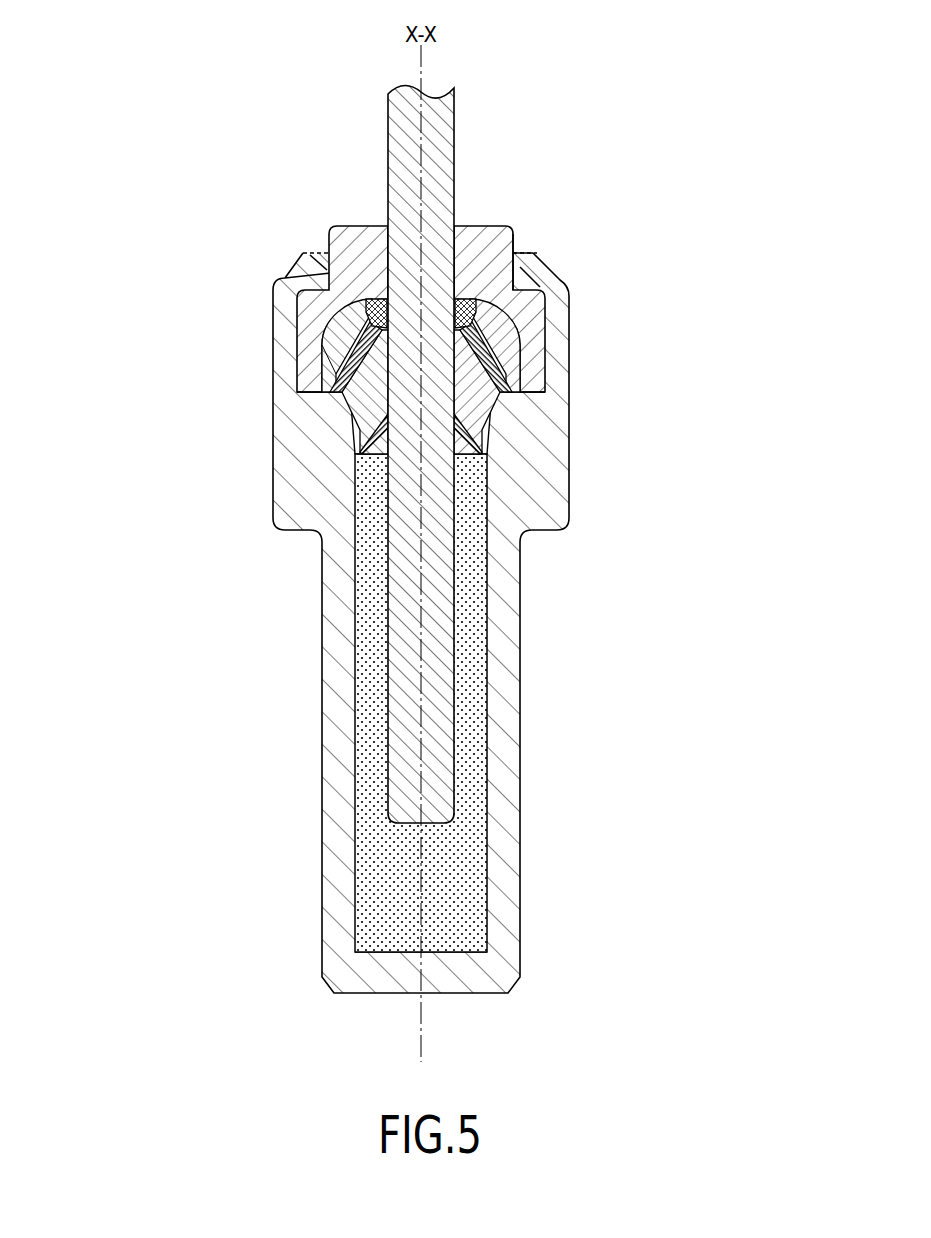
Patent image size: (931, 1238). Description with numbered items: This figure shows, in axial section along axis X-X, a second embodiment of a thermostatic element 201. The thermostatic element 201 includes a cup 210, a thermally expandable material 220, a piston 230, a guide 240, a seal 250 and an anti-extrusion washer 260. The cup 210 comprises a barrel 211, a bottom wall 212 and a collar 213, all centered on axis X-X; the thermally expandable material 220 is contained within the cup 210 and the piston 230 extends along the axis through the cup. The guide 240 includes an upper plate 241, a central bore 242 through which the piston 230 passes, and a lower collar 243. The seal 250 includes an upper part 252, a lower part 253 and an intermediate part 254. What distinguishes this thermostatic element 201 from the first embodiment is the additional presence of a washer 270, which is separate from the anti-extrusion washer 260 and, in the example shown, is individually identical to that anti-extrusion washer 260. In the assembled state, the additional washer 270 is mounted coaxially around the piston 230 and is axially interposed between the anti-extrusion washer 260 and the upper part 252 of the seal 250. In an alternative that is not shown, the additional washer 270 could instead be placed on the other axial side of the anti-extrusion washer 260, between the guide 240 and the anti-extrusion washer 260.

The thermostatic element 201 is at (268, 258).
The cup 210 is at (152, 656).
The barrel 211 is at (346, 713).
The bottom wall 212 is at (358, 977).
The collar 213 is at (296, 490).
The thermally expandable material 220 is at (400, 930).
The piston 230 is at (438, 718).
The guide 240 is at (512, 216).
The upper plate 241 is at (495, 250).
The central bore 242 is at (446, 250).
The lower collar 243 is at (310, 386).
The seal 250 is at (728, 330).
The upper part 252 is at (545, 328).
The lower part 253 is at (493, 407).
The intermediate part 254 is at (545, 357).
The anti-extrusion washer 260 is at (372, 300).
The washer 270 is at (347, 357).